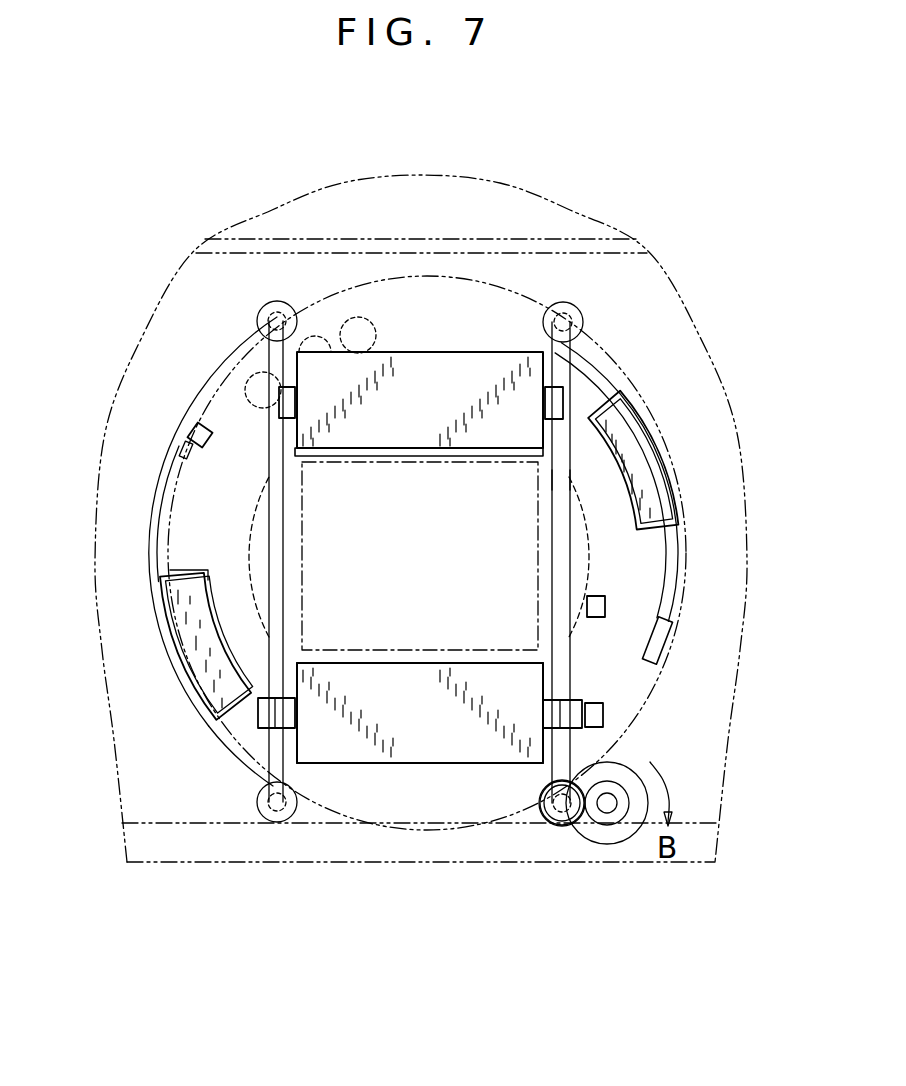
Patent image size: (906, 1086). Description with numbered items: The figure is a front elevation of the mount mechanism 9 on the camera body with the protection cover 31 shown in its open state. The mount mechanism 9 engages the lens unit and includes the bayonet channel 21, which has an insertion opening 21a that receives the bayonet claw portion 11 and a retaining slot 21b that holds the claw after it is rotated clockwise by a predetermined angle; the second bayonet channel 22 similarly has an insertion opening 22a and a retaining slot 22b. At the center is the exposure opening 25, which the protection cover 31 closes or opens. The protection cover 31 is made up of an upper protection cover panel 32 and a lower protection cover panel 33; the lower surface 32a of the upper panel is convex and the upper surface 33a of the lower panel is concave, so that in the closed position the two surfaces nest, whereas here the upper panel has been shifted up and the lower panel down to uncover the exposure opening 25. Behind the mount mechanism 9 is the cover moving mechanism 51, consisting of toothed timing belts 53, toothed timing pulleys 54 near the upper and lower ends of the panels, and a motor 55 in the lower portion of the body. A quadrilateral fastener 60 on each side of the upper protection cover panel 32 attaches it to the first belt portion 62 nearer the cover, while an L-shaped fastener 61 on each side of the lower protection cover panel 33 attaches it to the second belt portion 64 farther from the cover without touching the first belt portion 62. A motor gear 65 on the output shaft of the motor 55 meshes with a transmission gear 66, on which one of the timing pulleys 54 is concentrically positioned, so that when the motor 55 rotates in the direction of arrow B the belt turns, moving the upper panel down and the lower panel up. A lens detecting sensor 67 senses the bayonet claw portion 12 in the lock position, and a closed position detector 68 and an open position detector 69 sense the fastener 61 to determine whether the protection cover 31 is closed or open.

The mount mechanism 9 is at (467, 840).
The bayonet claw portion 11 is at (648, 449).
The bayonet claw portion 12 is at (185, 645).
The bayonet channel 21 is at (190, 718).
The insertion opening 21a is at (173, 576).
The retaining slot 21b is at (165, 530).
The bayonet channel 22 is at (647, 392).
The insertion opening 22a is at (670, 531).
The retaining slot 22b is at (672, 586).
The exposure opening 25 is at (385, 463).
The protection cover 31 is at (347, 780).
The upper protection cover panel 32 is at (418, 350).
The lower surface 32a is at (468, 457).
The lower protection cover panel 33 is at (413, 765).
The upper surface 33a is at (343, 660).
The cover moving mechanism 51 is at (268, 262).
The timing belt 53 is at (538, 340).
The timing pulleys 54 is at (270, 303).
The motor 55 is at (627, 843).
The fastener 60 is at (279, 402).
The fastener 61 is at (262, 698).
The first belt portion 62 is at (570, 479).
The second belt portion 64 is at (577, 570).
The motor gear 65 is at (605, 827).
The transmission gear 66 is at (562, 828).
The lens detecting sensor 67 is at (190, 428).
The closed position detector 68 is at (606, 606).
The open position detector 69 is at (595, 702).